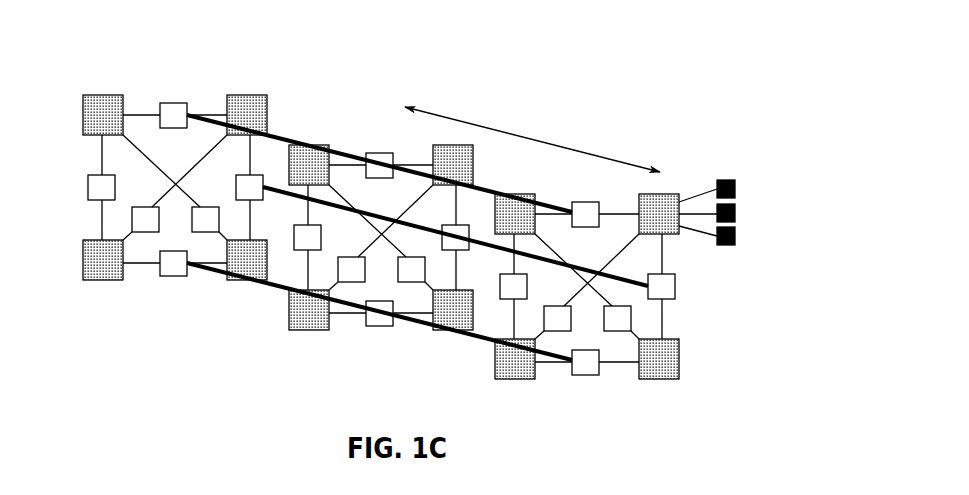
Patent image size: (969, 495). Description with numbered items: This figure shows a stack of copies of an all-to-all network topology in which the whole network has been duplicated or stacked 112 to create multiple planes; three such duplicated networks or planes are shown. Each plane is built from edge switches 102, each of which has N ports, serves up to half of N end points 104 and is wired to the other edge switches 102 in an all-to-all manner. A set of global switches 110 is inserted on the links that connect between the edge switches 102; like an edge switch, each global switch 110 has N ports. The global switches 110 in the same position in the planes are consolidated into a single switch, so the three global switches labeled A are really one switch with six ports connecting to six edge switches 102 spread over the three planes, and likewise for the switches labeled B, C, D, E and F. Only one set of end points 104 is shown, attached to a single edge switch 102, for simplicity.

The edge switch 102 is at (247, 95).
The end points 104 is at (735, 237).
The global switch 110 is at (177, 103).
The stacked network 112 is at (409, 44).